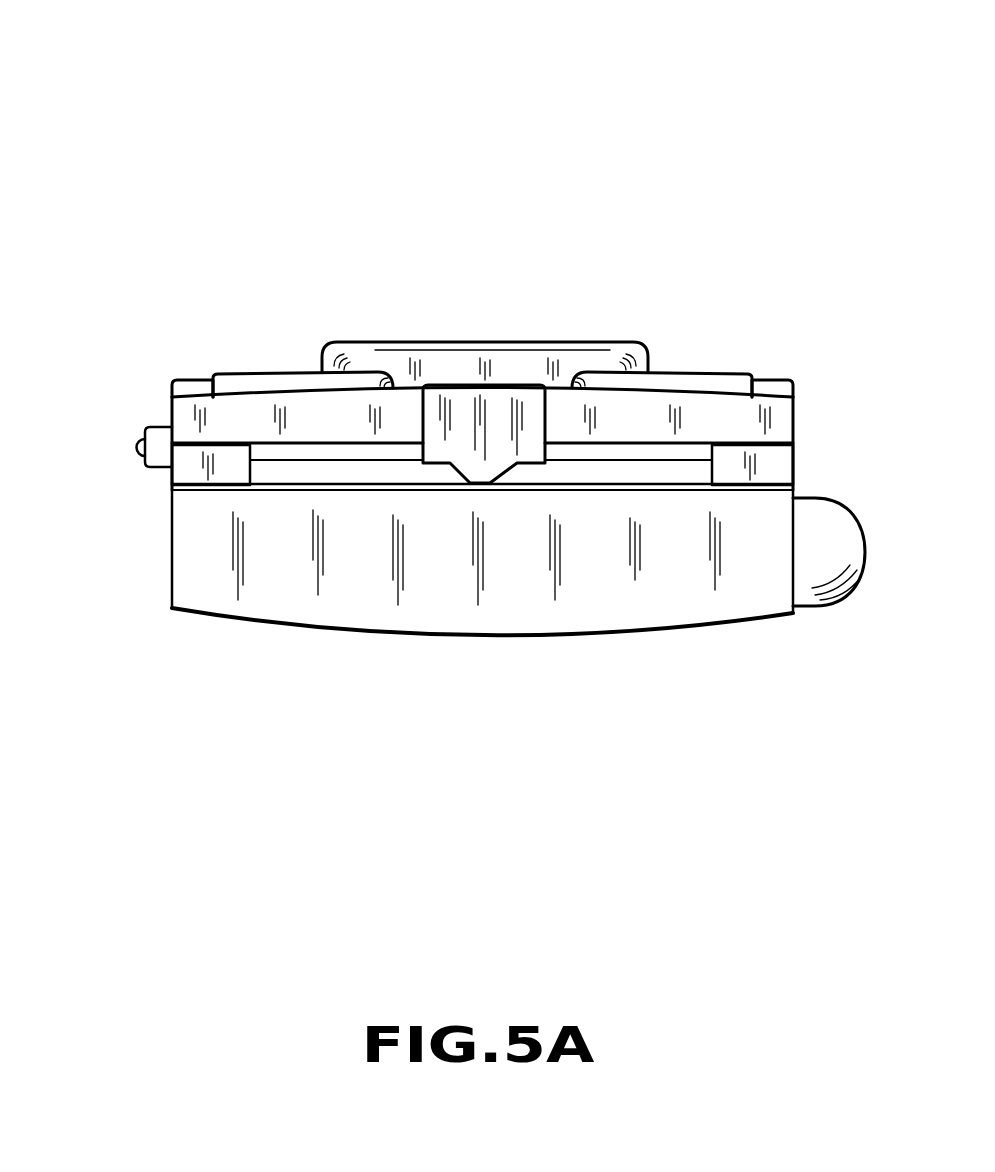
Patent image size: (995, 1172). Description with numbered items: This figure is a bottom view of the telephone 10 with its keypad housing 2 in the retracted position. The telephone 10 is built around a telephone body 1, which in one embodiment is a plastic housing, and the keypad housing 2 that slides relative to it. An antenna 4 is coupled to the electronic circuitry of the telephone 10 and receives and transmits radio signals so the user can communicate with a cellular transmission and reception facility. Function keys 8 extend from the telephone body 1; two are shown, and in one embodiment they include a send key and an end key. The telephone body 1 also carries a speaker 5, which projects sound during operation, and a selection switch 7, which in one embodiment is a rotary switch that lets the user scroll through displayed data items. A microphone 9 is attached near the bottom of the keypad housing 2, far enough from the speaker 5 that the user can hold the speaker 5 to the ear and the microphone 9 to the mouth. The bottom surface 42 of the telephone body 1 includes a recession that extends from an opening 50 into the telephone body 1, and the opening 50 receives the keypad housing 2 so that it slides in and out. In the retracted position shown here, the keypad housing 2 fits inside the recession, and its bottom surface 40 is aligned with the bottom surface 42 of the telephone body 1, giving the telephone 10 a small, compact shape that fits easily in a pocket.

The telephone 10 is at (114, 86).
The telephone body 1 is at (624, 640).
The keypad housing 2 is at (300, 475).
The antenna 4 is at (843, 508).
The speaker 5 is at (400, 342).
The selection switch 7 is at (146, 433).
The function keys 8 is at (243, 376).
The microphone 9 is at (447, 452).
The bottom surface of keypad housing 40 is at (572, 476).
The bottom surface of telephone body 42 is at (451, 602).
The opening 50 is at (700, 453).